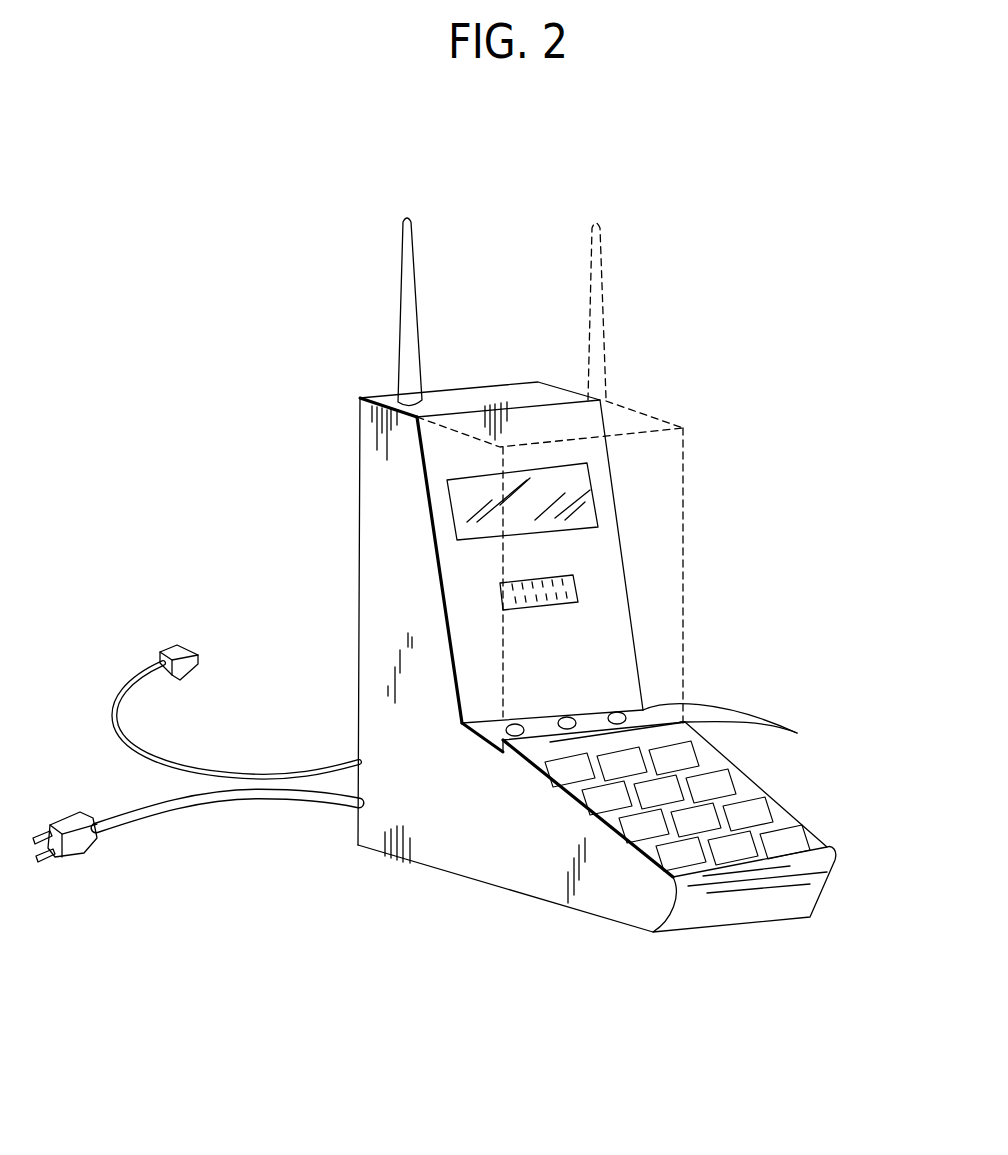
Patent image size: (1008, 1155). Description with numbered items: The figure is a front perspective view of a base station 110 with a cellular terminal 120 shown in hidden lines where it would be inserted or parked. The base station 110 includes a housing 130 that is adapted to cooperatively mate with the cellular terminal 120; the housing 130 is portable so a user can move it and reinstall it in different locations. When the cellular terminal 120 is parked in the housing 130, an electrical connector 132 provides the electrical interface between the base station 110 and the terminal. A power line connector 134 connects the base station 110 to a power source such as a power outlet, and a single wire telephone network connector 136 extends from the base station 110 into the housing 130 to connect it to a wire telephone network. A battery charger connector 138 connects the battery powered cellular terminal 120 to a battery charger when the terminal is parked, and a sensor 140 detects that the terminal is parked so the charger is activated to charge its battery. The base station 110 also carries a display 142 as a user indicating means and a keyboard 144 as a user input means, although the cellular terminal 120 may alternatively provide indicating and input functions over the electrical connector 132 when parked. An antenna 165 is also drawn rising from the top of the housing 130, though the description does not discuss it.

The base station 110 is at (686, 322).
The cellular terminal 120 is at (685, 430).
The housing 130 is at (447, 862).
The electrical connector 132 is at (580, 580).
The power line connector 134 is at (173, 812).
The wire telephone network connector 136 is at (118, 715).
The battery charger connector 138 is at (797, 733).
The sensor 140 is at (567, 718).
The display 142 is at (457, 498).
The keyboard 144 is at (805, 845).
The antenna 165 is at (403, 292).